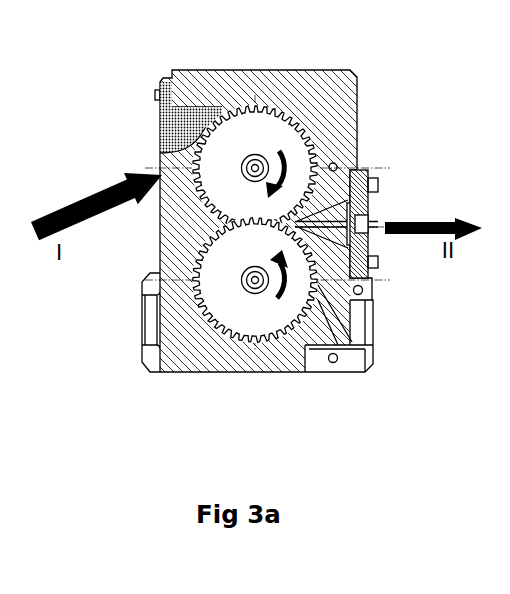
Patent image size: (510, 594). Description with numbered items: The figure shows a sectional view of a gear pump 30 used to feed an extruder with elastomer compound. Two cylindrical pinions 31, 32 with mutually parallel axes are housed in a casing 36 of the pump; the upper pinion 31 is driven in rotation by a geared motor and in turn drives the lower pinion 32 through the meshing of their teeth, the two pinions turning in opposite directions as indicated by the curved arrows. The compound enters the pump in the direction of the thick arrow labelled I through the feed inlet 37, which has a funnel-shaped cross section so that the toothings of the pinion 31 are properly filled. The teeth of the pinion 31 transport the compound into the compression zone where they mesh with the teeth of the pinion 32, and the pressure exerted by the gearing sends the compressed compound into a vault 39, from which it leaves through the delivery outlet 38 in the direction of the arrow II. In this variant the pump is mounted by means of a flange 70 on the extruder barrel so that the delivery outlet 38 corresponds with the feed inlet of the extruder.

The gear pump 30 is at (125, 106).
The pinion 31 is at (277, 128).
The pinion 32 is at (272, 318).
The casing 36 is at (205, 350).
The feed inlet 37 is at (160, 157).
The delivery outlet 38 is at (372, 222).
The vault 39 is at (325, 210).
The flange 70 is at (368, 272).